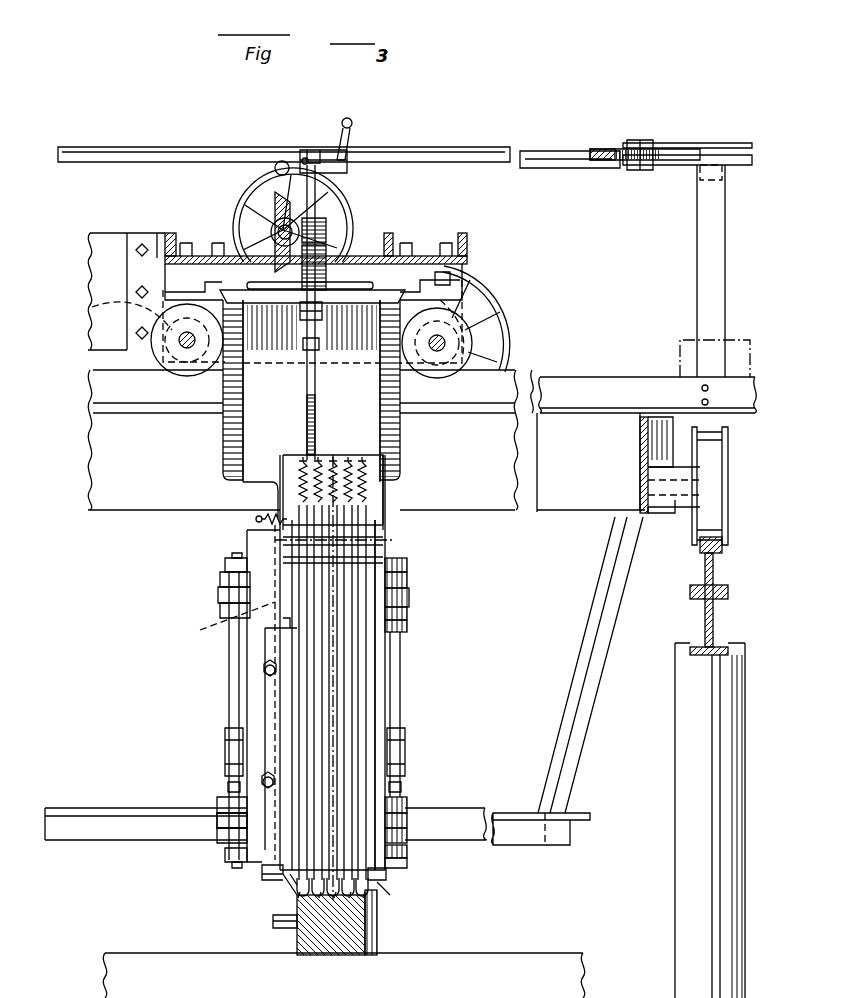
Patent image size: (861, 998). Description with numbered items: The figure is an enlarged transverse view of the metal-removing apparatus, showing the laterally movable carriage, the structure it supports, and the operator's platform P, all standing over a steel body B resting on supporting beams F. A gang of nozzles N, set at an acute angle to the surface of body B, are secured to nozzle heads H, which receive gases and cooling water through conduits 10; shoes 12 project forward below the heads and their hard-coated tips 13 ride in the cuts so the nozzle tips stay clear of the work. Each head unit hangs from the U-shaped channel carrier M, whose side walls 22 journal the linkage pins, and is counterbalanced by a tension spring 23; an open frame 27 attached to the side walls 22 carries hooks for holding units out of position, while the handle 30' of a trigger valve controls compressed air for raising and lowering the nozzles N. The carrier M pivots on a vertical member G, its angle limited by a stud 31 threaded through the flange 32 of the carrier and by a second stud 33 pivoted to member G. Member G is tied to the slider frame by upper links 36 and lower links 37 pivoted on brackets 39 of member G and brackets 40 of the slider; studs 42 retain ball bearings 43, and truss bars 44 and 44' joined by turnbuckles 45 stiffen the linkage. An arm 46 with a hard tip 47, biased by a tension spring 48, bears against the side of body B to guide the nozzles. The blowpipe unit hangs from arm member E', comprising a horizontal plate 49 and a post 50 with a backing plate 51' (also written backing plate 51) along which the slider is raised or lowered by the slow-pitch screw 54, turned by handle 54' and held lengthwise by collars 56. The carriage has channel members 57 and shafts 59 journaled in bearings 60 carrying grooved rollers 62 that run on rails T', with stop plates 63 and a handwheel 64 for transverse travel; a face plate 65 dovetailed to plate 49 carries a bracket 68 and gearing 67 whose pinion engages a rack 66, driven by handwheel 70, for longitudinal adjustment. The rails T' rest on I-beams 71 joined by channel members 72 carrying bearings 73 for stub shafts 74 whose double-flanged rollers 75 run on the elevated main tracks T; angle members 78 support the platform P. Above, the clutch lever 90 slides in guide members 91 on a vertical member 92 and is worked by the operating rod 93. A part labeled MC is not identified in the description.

The conduits 10 is at (375, 523).
The shoes 12 is at (290, 906).
The tips 13 is at (378, 929).
The side walls 22 is at (385, 494).
The tension spring 23 is at (354, 462).
The rectangular open frame 27 is at (382, 545).
The handle 30' is at (424, 894).
The threaded stud 31 is at (263, 783).
The flanged portion 32 is at (265, 711).
The second threaded stud 33 is at (266, 672).
The upper links 36 is at (410, 599).
The lower links 37 is at (228, 820).
The spaced brackets 39 is at (225, 578).
The spaced brackets 40 is at (222, 594).
The threaded studs 42 is at (237, 553).
The ball bearings 43 is at (230, 560).
The truss bars 44 is at (309, 716).
The truss bars 44' is at (311, 794).
The turnbuckles 45 is at (226, 758).
The arm 46 is at (283, 878).
The shoe 47 is at (293, 928).
The tension spring 48 is at (262, 515).
The horizontal plate 49 is at (345, 302).
The post 50 is at (220, 392).
The backing plate 51 is at (314, 390).
The backing plate 51' is at (271, 391).
The slow pitch screw 54 is at (335, 312).
The handle 54' is at (368, 136).
The collars 56 is at (301, 350).
The channel members 57 is at (176, 240).
The shafts 59 is at (182, 344).
The bearings 60 is at (92, 307).
The grooved rollers 62 is at (160, 363).
The plates 63 is at (688, 340).
The handwheel 64 is at (498, 302).
The face plate 65 is at (420, 265).
The toothed rack 66 is at (298, 320).
The gearing 67 is at (318, 218).
The bracket 68 is at (328, 250).
The handwheel 70 is at (264, 172).
The I-beams 71 is at (580, 506).
The channel members 72 is at (645, 452).
The bearings 73 is at (660, 486).
The stub shafts 74 is at (712, 472).
The rollers 75 is at (722, 524).
The angle members 78 is at (596, 614).
The lever 90 is at (612, 150).
The guide members 91 is at (692, 150).
The vertical member 92 is at (697, 255).
The clutch operating rod 93 is at (438, 150).
The metallic body B is at (325, 936).
The arm member E' is at (231, 692).
The supporting beams F is at (478, 972).
The vertically extending member G is at (244, 675).
The nozzle heads H is at (368, 654).
The channel member M is at (350, 446).
The machine carriage MC is at (95, 287).
The nozzles N is at (372, 876).
The platform P is at (80, 808).
The main rails T is at (700, 775).
The rails T' is at (648, 383).